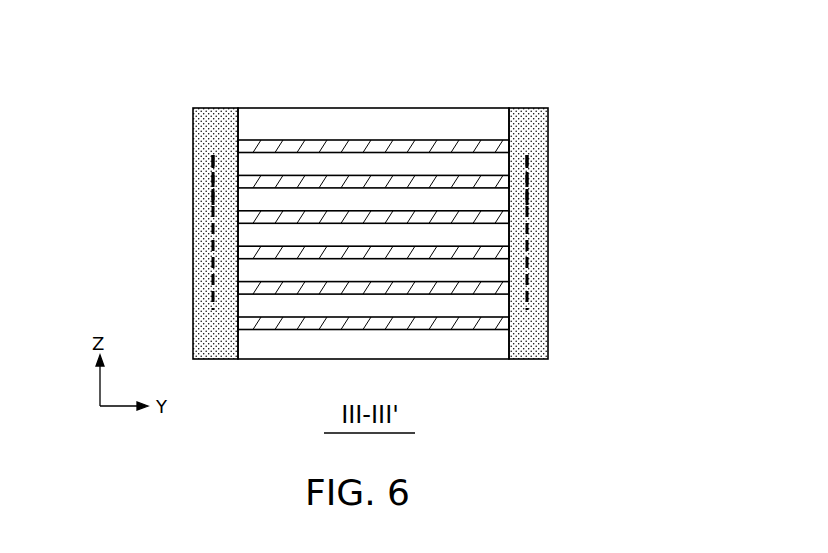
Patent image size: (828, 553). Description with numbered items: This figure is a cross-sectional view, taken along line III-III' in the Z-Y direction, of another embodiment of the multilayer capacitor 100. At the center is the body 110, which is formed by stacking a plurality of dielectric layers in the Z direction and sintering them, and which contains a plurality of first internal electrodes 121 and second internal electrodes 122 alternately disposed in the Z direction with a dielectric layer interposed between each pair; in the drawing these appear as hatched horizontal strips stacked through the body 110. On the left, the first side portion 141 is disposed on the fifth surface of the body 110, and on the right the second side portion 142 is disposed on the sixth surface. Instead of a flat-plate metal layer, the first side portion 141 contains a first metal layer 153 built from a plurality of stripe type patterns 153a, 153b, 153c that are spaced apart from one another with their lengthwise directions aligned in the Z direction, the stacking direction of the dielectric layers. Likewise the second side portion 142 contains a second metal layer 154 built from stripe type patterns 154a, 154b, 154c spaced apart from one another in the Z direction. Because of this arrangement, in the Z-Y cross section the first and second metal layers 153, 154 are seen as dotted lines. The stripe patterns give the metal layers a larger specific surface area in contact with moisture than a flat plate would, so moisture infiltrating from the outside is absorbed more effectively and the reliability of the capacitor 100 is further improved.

The multilayer capacitor 100 is at (370, 181).
The body 110 is at (283, 108).
The first internal electrode 121 is at (367, 145).
The second internal electrode 122 is at (430, 178).
The first side portion 141 is at (215, 118).
The second side portion 142 is at (522, 120).
The first metal layer 153 is at (113, 148).
The stripe type pattern 153a is at (212, 162).
The stripe type pattern 153b is at (212, 185).
The stripe type pattern 153c is at (212, 205).
The second metal layer 154 is at (625, 148).
The stripe type pattern 154a is at (528, 162).
The stripe type pattern 154b is at (528, 185).
The stripe type pattern 154c is at (528, 205).